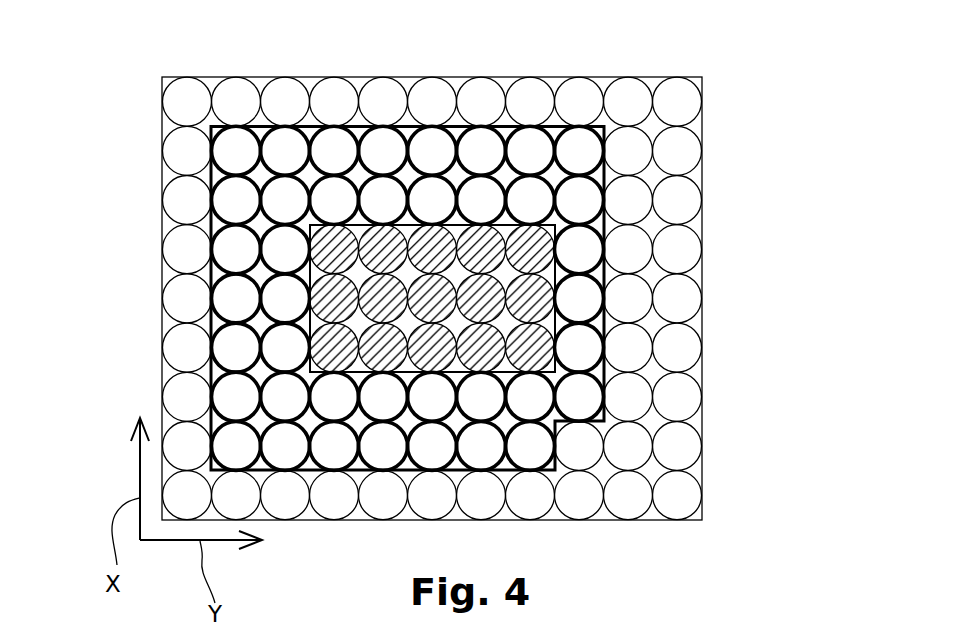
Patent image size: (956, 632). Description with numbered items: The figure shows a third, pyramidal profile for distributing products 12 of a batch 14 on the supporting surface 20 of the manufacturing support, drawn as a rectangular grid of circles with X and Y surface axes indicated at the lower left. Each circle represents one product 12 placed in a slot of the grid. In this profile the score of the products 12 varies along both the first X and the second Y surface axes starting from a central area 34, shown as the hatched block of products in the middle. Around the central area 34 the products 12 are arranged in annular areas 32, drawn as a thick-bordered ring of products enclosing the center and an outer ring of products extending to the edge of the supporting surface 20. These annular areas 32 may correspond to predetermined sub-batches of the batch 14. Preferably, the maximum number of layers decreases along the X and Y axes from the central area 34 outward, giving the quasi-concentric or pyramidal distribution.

The product 12 is at (182, 199).
The batch 14 is at (702, 72).
The supporting surface 20 is at (703, 374).
The annular area 32 is at (548, 127).
The central area 34 is at (545, 283).